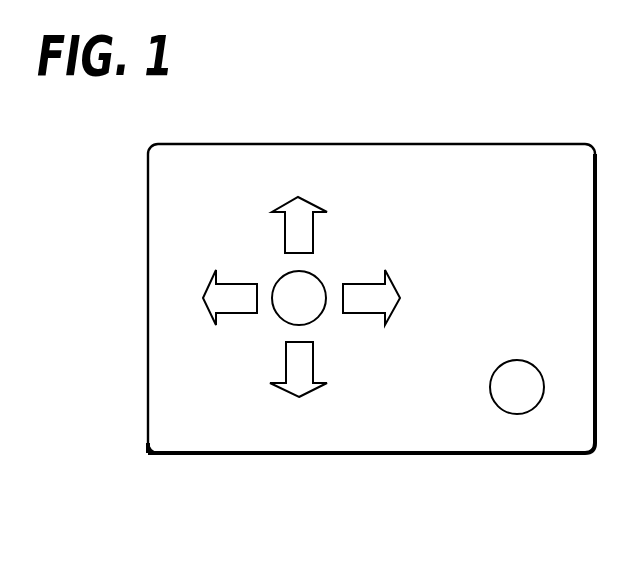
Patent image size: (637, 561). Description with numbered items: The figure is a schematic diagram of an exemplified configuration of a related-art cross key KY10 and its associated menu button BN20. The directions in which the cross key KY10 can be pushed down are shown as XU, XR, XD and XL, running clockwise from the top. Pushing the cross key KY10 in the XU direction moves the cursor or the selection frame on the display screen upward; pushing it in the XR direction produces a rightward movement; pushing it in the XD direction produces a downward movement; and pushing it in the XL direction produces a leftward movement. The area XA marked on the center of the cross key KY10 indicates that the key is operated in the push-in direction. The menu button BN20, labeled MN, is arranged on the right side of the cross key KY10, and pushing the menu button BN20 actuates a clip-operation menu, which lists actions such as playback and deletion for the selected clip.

The cross key KY10 is at (229, 298).
The menu button BN20 is at (525, 447).
The XU direction XU is at (299, 225).
The XD direction XD is at (298, 369).
The XL direction XL is at (230, 297).
The XR direction XR is at (371, 297).
The XA area XA is at (299, 298).
The menu key label MN is at (517, 387).